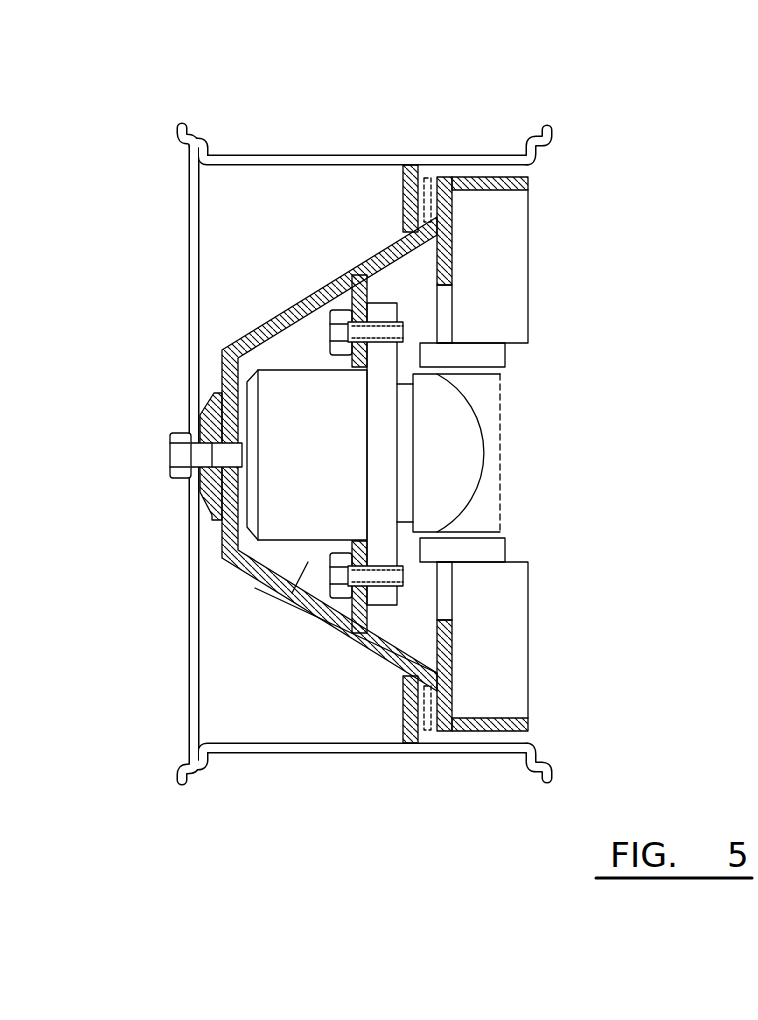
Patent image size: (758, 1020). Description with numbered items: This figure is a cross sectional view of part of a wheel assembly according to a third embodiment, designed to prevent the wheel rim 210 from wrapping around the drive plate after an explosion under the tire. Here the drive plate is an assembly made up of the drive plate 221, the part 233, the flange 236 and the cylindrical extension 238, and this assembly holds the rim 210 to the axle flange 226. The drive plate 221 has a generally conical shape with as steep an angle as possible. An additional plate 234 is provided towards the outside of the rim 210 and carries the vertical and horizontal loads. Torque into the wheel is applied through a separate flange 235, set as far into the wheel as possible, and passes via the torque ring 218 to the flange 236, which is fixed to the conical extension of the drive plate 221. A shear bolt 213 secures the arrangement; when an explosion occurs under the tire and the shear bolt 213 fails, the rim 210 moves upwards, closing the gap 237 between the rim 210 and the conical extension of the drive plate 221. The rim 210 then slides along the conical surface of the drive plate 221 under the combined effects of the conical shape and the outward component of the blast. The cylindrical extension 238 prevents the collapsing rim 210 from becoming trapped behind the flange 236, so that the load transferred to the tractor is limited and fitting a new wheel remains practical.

The wheel rim 210 is at (298, 752).
The shear bolt 213 is at (178, 455).
The torque ring 218 is at (430, 190).
The drive plate 221 is at (357, 275).
The axle flange 226 is at (383, 484).
The drive plate part 233 is at (223, 383).
The additional plate 234 is at (190, 620).
The separate flange 235 is at (400, 190).
The flange 236 is at (452, 250).
The gap 237 is at (280, 613).
The cylindrical extension 238 is at (513, 190).